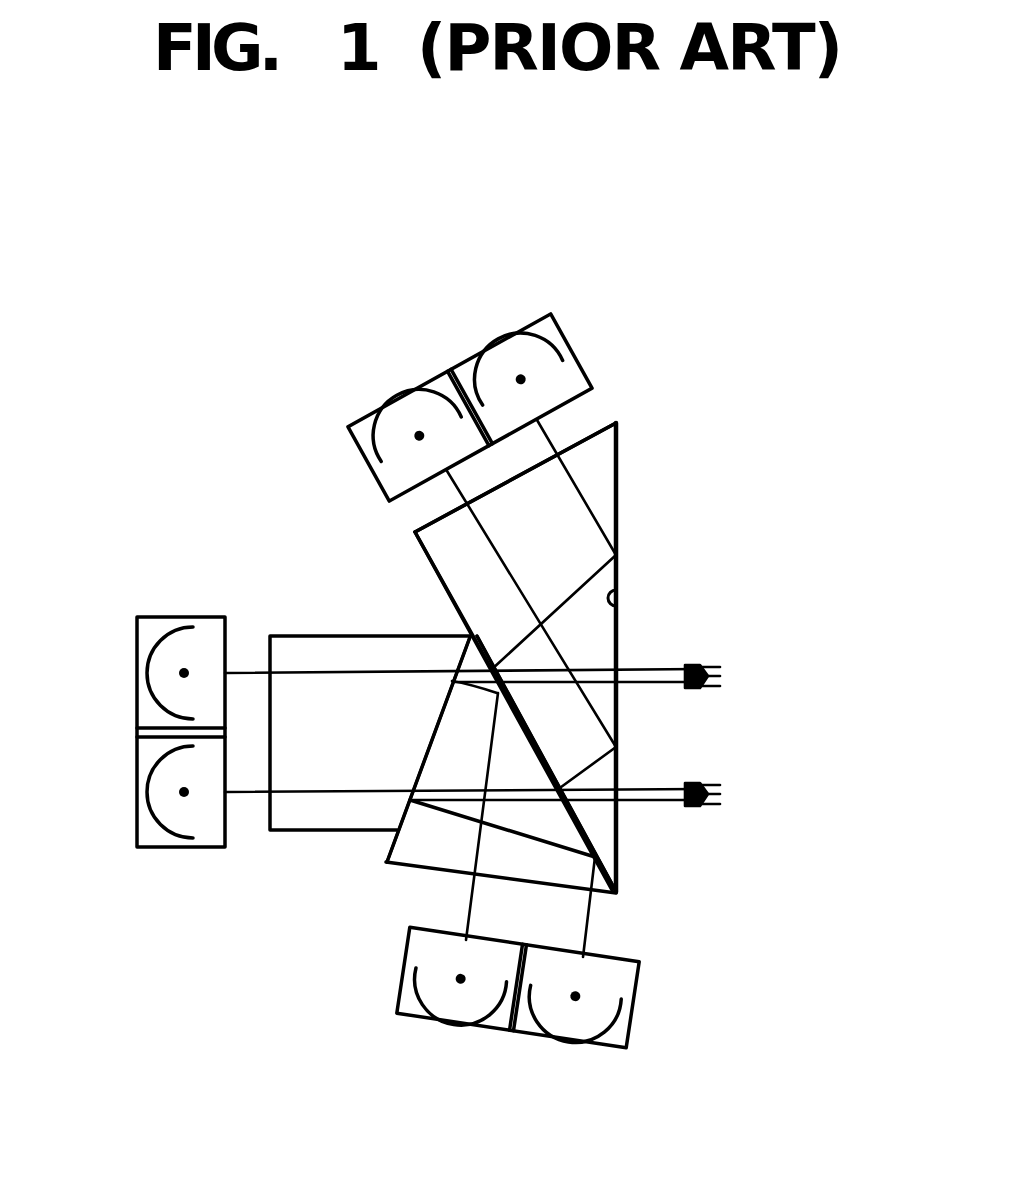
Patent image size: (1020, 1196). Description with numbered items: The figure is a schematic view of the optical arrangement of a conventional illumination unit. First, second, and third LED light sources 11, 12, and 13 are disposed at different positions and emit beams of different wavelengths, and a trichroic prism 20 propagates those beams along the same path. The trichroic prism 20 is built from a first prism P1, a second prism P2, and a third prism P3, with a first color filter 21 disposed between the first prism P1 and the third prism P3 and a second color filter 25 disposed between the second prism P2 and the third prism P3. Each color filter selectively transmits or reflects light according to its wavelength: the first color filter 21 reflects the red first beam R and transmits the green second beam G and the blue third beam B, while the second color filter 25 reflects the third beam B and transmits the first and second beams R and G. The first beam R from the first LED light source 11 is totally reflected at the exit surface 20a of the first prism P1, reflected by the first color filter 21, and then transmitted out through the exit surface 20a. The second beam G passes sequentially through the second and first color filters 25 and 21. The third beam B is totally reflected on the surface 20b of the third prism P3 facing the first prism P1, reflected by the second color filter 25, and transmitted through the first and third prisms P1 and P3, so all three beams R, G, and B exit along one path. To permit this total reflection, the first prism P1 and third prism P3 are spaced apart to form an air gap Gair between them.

The first LED light source 11 is at (578, 362).
The second LED light source 12 is at (137, 807).
The third LED light source 13 is at (630, 1032).
The trichroic prism 20 is at (664, 434).
The exit surface 20a is at (620, 612).
The surface of the third prism facing the first prism 20b is at (614, 889).
The first color filter 21 is at (545, 754).
The second color filter 25 is at (400, 815).
The first prism P1 is at (597, 482).
The second prism P2 is at (315, 655).
The third prism P3 is at (414, 848).
The first beam R is at (598, 517).
The second beam G is at (297, 793).
The third beam B is at (590, 928).
The air gap Gair is at (600, 843).